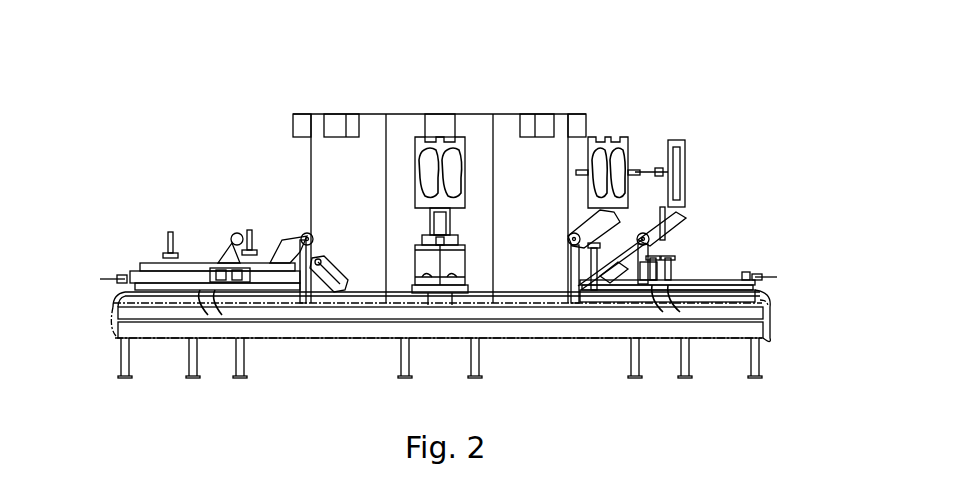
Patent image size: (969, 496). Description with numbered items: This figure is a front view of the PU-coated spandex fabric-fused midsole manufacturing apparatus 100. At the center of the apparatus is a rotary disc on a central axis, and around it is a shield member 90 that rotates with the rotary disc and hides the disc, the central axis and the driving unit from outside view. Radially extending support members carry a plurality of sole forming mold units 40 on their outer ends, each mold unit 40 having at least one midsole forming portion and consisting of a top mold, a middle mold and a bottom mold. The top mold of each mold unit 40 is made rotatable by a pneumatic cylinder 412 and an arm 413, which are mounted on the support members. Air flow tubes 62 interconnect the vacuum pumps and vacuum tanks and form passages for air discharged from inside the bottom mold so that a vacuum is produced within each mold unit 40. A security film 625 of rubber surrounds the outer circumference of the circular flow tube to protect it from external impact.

The midsole manufacturing apparatus 100 is at (274, 92).
The shield member 90 is at (333, 192).
The sole forming mold unit 40 is at (692, 162).
The pneumatic cylinder 412 is at (330, 253).
The arm 413 is at (668, 227).
The air flow tube 62 is at (497, 322).
The security film 625 is at (770, 333).